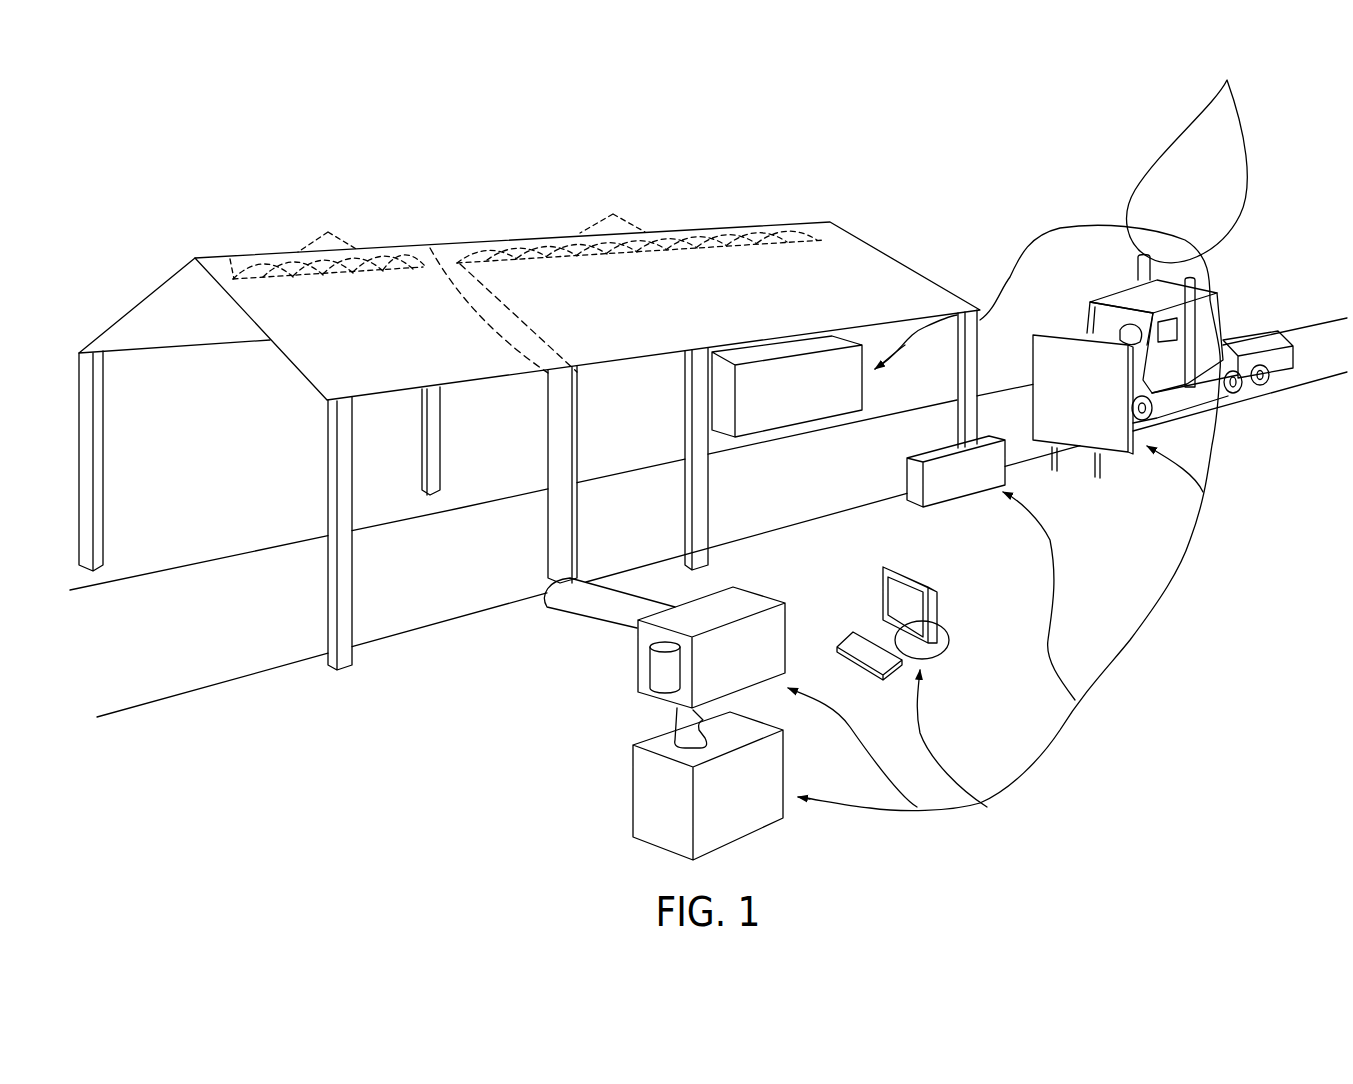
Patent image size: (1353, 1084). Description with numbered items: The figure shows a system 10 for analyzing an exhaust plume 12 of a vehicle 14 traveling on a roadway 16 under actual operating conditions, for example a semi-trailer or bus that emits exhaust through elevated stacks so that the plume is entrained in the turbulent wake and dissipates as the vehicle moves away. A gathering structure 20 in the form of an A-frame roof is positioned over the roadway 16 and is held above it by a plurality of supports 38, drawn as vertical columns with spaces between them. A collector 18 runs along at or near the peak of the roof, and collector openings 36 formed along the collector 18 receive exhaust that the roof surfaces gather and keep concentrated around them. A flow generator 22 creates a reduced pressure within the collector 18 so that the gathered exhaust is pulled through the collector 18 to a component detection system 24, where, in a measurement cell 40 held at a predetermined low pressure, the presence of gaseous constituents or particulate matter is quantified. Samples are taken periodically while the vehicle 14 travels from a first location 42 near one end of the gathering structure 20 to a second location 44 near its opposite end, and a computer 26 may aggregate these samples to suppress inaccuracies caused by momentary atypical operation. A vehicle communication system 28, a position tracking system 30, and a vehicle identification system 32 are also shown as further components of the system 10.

The system 10 is at (928, 155).
The exhaust plume 12 is at (1237, 160).
The vehicle 14 is at (1223, 312).
The roadway 16 is at (460, 616).
The collector 18 is at (548, 344).
The gathering structure 20 is at (903, 274).
The flow generator 22 is at (645, 817).
The component detection system 24 is at (702, 639).
The computer 26 is at (932, 590).
The vehicle communication system 28 is at (1117, 447).
The position tracking system 30 is at (865, 398).
The vehicle identification system 32 is at (942, 493).
The collector openings 36 is at (328, 231).
The supports 38 is at (104, 502).
The measurement cell 40 is at (658, 670).
The first location 42 is at (848, 491).
The second location 44 is at (246, 623).